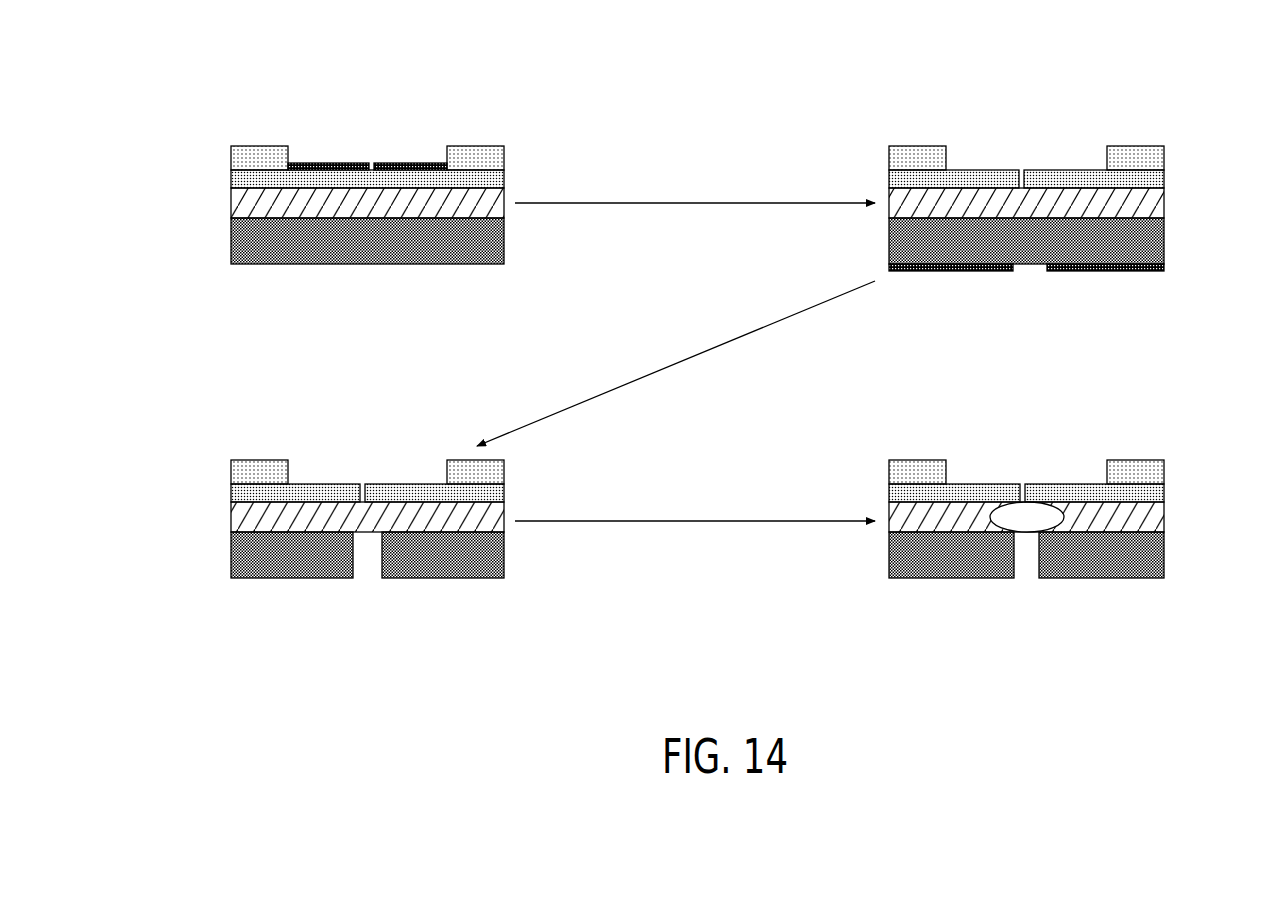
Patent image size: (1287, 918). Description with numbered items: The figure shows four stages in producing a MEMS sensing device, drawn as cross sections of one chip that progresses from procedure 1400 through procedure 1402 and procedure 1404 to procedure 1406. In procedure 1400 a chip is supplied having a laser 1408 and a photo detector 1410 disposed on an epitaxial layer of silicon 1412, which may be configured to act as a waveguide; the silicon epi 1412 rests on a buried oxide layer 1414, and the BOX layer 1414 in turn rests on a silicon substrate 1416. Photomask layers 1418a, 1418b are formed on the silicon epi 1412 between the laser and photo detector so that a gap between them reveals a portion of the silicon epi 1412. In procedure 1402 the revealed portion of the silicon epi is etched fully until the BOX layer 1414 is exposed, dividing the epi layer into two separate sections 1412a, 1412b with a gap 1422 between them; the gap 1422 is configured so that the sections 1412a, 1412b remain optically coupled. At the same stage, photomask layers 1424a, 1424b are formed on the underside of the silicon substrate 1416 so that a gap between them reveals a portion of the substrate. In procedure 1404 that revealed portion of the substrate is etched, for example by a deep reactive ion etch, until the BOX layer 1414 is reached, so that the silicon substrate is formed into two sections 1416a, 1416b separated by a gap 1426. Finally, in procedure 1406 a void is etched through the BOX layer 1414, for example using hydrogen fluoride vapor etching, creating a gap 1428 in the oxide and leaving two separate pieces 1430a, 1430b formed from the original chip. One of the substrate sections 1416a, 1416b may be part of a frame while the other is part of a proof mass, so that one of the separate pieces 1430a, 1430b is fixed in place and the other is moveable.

The procedure 1400 is at (357, 50).
The procedure 1402 is at (1022, 49).
The procedure 1404 is at (335, 382).
The procedure 1406 is at (970, 381).
The laser 1408 is at (231, 146).
The photo detector 1410 is at (449, 146).
The epitaxial layer of silicon 1412 is at (231, 180).
The silicon epi section 1412a is at (889, 180).
The silicon epi section 1412b is at (1164, 178).
The buried oxide layer 1414 is at (231, 198).
The silicon substrate 1416 is at (231, 235).
The silicon substrate section 1416a is at (231, 549).
The silicon substrate section 1416b is at (504, 549).
The photomask layer 1418a is at (338, 163).
The photomask layer 1418b is at (407, 163).
The gap 1422 is at (1021, 158).
The photomask layer 1424a is at (957, 271).
The photomask layer 1424b is at (1164, 268).
The gap 1426 is at (365, 589).
The gap 1428 is at (1027, 517).
The separate piece 1430a is at (894, 605).
The separate piece 1430b is at (1151, 605).